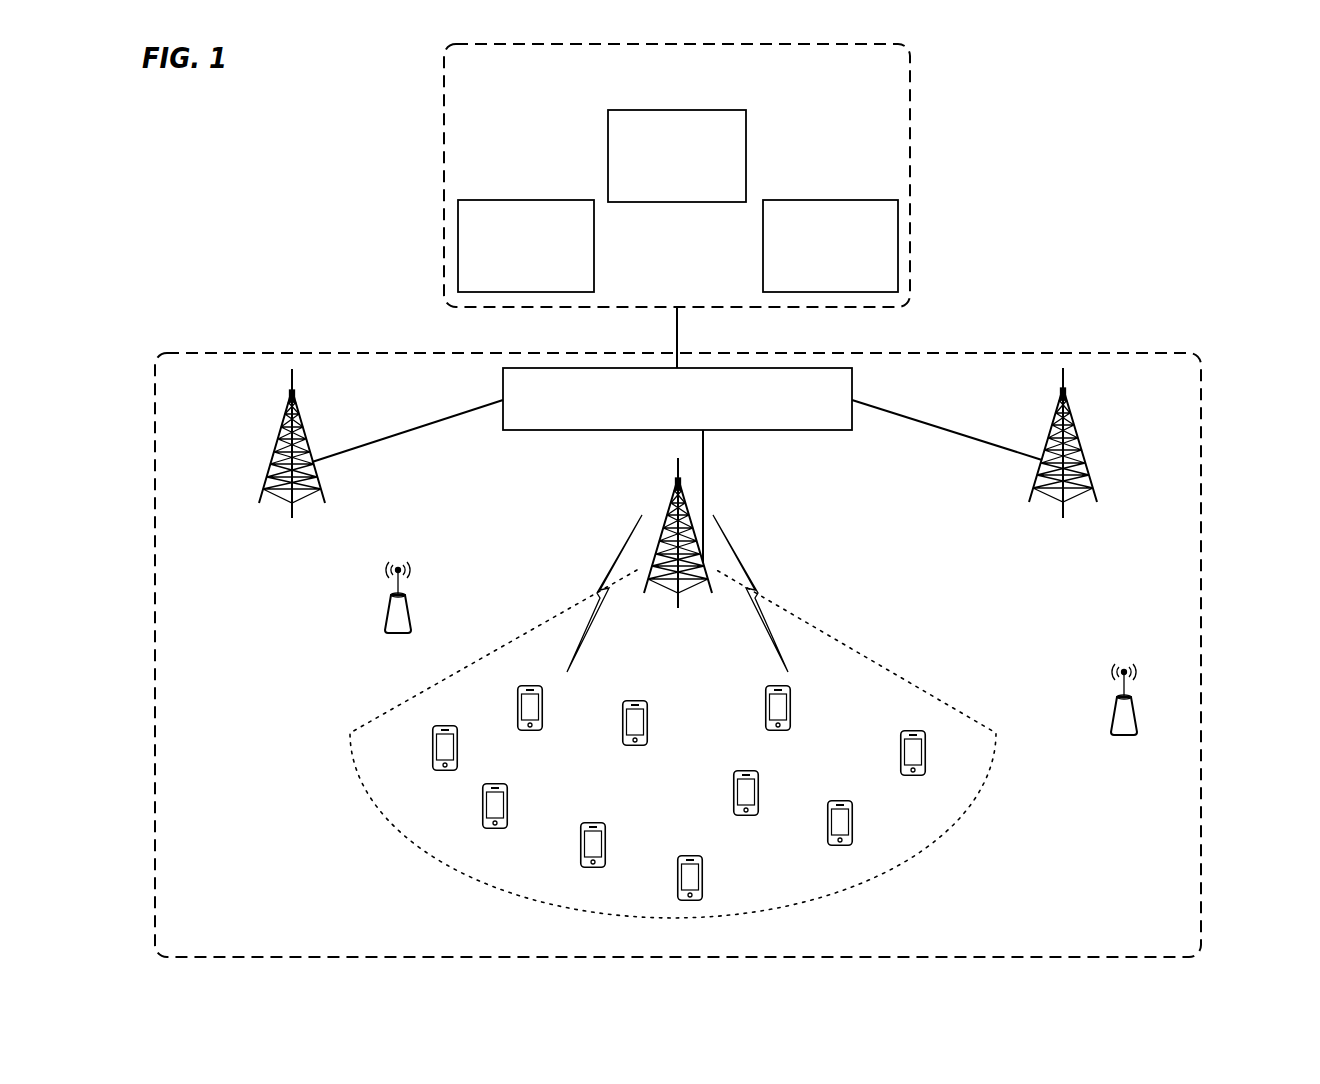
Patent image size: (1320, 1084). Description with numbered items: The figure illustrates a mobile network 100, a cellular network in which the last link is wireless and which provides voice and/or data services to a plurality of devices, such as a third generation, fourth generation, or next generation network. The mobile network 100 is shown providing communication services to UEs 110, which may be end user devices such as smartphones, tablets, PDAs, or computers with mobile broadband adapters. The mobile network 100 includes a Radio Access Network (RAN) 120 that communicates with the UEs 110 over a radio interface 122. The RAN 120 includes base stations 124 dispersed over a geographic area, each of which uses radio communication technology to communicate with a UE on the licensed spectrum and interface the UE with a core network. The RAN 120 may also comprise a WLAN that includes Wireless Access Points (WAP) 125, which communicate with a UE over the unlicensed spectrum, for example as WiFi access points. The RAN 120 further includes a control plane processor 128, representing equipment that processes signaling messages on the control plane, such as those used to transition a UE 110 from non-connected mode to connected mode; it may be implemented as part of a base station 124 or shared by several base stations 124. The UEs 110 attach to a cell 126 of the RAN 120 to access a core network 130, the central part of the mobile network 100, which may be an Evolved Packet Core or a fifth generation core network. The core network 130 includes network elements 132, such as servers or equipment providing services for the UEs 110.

The mobile network 100 is at (1175, 111).
The UE 110 is at (648, 718).
The Radio Access Network (RAN) 120 is at (300, 946).
The radio interface 122 is at (610, 571).
The base station 124 is at (282, 418).
The Wireless Access Point (WAP) 125 is at (388, 618).
The cell 126 is at (364, 710).
The control plane processor 128 is at (660, 421).
The core network 130 is at (660, 97).
The network element 132 is at (660, 188).